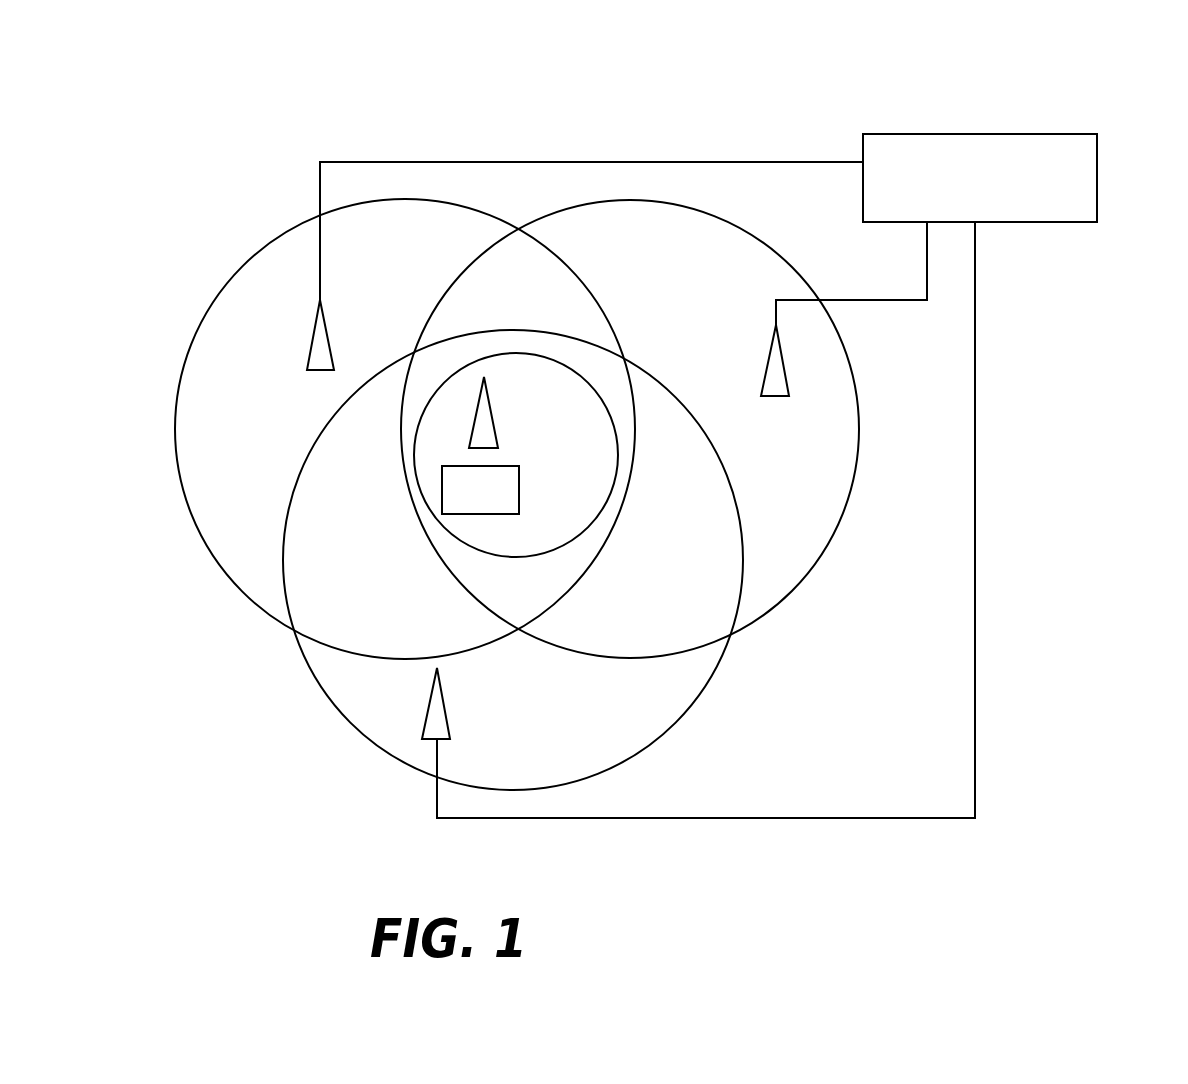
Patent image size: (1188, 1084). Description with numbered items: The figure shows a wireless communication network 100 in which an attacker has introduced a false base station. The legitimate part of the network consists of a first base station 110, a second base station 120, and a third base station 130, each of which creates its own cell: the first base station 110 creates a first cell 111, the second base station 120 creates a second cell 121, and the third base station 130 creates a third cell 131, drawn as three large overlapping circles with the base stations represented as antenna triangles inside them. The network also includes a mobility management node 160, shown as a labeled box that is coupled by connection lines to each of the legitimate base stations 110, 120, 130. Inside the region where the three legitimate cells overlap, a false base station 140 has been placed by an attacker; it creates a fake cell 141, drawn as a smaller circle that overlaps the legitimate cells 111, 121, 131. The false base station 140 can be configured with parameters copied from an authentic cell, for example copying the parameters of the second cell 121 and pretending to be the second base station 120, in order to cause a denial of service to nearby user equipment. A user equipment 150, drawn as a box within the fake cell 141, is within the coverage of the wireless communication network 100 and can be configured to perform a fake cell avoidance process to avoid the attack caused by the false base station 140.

The wireless communication network 100 is at (820, 63).
The first base station 110 is at (330, 327).
The first cell 111 is at (228, 282).
The second base station 120 is at (783, 360).
The second cell 121 is at (857, 453).
The third base station 130 is at (447, 712).
The third cell 131 is at (330, 698).
The false base station 140 is at (499, 415).
The fake cell 141 is at (619, 474).
The user equipment 150 is at (519, 484).
The mobility management node 160 is at (1097, 170).